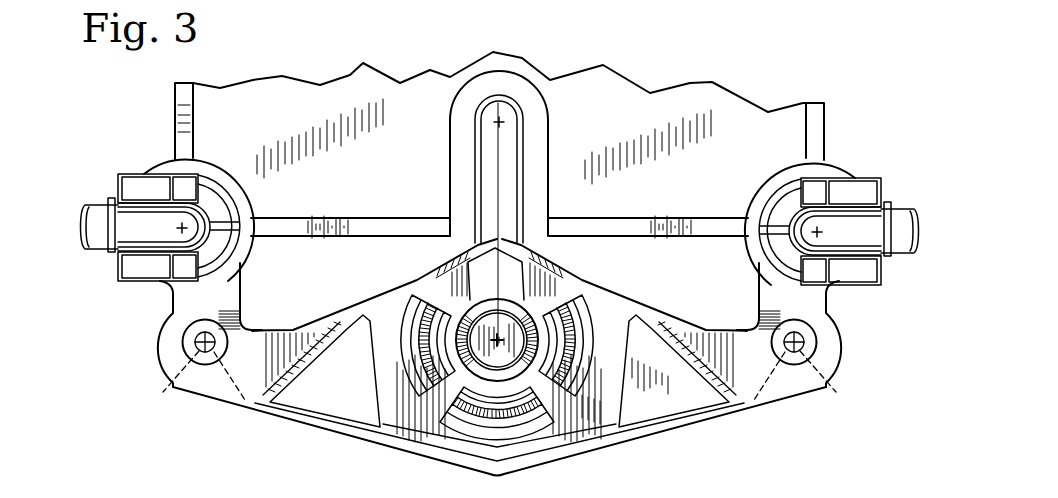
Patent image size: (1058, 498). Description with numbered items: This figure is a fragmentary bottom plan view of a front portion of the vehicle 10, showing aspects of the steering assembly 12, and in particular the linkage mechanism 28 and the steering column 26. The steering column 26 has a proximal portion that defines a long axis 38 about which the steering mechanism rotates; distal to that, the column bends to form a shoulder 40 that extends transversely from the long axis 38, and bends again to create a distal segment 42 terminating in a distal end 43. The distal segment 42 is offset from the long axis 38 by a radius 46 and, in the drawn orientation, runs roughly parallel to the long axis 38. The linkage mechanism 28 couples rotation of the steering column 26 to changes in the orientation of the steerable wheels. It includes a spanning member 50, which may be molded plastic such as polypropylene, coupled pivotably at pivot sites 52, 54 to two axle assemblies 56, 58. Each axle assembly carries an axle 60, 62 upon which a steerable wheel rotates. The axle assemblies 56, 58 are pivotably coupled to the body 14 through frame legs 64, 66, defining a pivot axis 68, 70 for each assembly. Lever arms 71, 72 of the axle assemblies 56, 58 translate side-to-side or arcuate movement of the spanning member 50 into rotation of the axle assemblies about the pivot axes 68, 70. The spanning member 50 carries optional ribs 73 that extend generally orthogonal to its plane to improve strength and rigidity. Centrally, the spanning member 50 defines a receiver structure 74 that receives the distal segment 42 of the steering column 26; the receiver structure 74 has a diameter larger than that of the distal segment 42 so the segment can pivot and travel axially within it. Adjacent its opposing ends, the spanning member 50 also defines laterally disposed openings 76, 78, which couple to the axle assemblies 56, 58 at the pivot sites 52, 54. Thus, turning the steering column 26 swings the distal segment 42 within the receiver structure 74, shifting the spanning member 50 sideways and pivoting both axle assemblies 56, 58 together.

The vehicle 10 is at (112, 101).
The steering assembly 12 is at (365, 168).
The body 14 is at (750, 94).
The steering column 26 is at (463, 145).
The linkage mechanism 28 is at (120, 357).
The long axis 38 is at (506, 116).
The shoulder 40 is at (512, 193).
The distal segment 42 is at (497, 371).
The distal end 43 is at (483, 336).
The radius 46 is at (490, 203).
The spanning member 50 is at (416, 459).
The pivot site 52 is at (189, 369).
The pivot site 54 is at (808, 372).
The axle assembly 56 is at (160, 286).
The axle assembly 58 is at (838, 291).
The axle 60 is at (102, 207).
The axle 62 is at (895, 210).
The frame leg 64 is at (207, 170).
The frame leg 66 is at (776, 185).
The pivot axis 68 is at (180, 229).
The pivot axis 70 is at (818, 233).
The lever arm 71 is at (234, 294).
The lever arm 72 is at (762, 298).
The ribs 73 is at (603, 441).
The receiver structure 74 is at (513, 355).
The lateral opening 76 is at (209, 392).
The lateral opening 78 is at (786, 394).